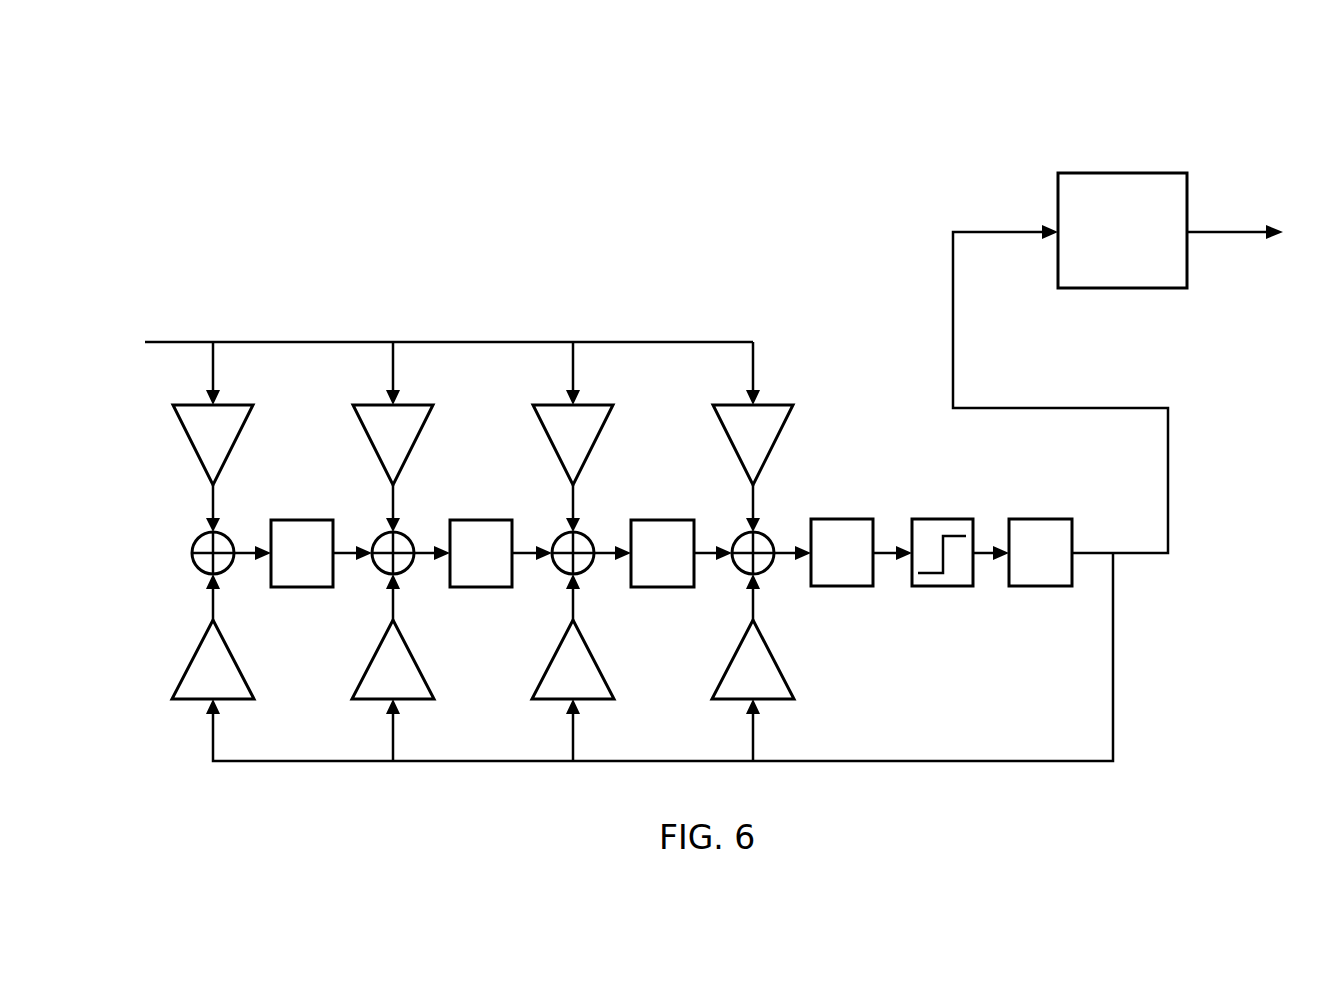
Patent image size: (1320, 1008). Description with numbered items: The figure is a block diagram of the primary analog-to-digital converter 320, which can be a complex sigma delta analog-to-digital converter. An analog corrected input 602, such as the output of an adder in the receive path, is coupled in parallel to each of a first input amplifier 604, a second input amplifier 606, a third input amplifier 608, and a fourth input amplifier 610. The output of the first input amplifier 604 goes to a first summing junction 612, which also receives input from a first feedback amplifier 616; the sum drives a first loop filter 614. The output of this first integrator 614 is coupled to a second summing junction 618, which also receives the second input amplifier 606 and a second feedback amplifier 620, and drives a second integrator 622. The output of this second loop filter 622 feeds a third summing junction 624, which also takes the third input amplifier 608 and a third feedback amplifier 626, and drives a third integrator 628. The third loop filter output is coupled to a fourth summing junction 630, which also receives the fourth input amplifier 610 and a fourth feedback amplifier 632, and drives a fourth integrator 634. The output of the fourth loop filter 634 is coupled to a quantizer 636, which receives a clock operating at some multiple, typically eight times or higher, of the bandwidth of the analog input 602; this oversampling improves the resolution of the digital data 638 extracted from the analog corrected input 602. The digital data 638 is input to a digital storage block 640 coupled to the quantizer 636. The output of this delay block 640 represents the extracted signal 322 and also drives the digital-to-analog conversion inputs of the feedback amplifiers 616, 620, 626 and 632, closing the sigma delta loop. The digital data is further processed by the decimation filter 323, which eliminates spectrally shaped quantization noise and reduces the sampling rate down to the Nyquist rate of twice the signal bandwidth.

The primary analog-to-digital converter 320 is at (214, 108).
The extracted signal 322 is at (1113, 637).
The decimation filter 323 is at (1133, 270).
The analog corrected input 602 is at (169, 340).
The first input amplifier 604 is at (195, 423).
The second input amplifier 606 is at (368, 413).
The third input amplifier 608 is at (560, 413).
The fourth input amplifier 610 is at (732, 413).
The first summing junction 612 is at (205, 542).
The first loop filter 614 is at (317, 532).
The first feedback amplifier 616 is at (197, 679).
The second summing junction 618 is at (382, 547).
The second feedback amplifier 620 is at (376, 673).
The second integrator 622 is at (483, 532).
The third summing junction 624 is at (555, 550).
The third feedback amplifier 626 is at (555, 680).
The third integrator 628 is at (682, 532).
The fourth summing junction 630 is at (742, 543).
The fourth feedback amplifier 632 is at (728, 682).
The fourth integrator 634 is at (823, 532).
The quantizer 636 is at (955, 577).
The digital data 638 is at (979, 548).
The digital storage block 640 is at (1063, 573).